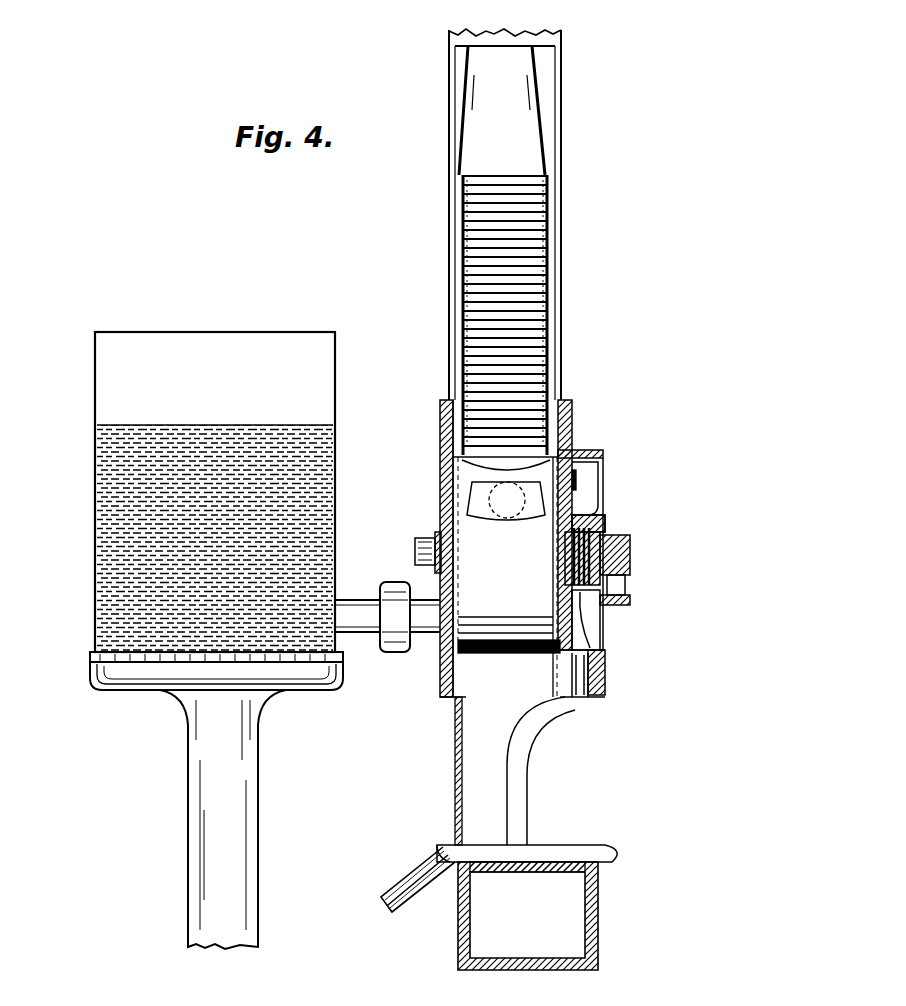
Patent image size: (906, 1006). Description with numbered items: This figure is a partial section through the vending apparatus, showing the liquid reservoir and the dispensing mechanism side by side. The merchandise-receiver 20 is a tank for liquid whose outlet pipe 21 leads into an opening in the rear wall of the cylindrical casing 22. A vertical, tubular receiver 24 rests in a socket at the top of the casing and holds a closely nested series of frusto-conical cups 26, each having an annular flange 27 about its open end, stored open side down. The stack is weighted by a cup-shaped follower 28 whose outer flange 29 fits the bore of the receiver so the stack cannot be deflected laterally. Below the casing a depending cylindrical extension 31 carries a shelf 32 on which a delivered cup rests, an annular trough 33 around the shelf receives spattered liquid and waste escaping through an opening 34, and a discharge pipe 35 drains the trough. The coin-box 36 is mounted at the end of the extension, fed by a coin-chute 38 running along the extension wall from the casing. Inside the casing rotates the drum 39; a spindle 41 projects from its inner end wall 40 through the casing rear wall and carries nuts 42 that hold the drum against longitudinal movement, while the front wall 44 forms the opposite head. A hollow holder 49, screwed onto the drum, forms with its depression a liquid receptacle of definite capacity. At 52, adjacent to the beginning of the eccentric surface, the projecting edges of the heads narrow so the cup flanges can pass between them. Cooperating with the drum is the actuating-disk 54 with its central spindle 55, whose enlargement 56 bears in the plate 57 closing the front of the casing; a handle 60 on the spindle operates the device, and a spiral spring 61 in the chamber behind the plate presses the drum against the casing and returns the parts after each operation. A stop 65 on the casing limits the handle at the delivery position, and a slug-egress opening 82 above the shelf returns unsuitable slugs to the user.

The merchandise-receiver 20 is at (95, 492).
The pipe 21 is at (380, 640).
The casing 22 is at (585, 452).
The vertical receiver 24 is at (562, 316).
The cups 26 is at (560, 230).
The annular flange 27 is at (456, 276).
The follower 28 is at (502, 110).
The flange 29 is at (556, 50).
The cylindrical extension 31 is at (455, 750).
The shelf 32 is at (545, 845).
The annular trough 33 is at (614, 851).
The opening 34 is at (448, 850).
The discharge pipe 35 is at (408, 900).
The coin-box 36 is at (500, 958).
The coin-chute 38 is at (527, 718).
The drum 39 is at (490, 680).
The inner end wall 40 is at (440, 520).
The spindle 41 is at (416, 552).
The nuts 42 is at (420, 538).
The front wall 44 is at (555, 577).
The hollow holder 49 is at (470, 482).
The narrowed portion of heads 52 is at (548, 640).
The actuating-disk 54 is at (575, 496).
The spindle 55 is at (631, 555).
The enlargement 56 is at (606, 528).
The plate 57 is at (590, 628).
The handle 60 is at (622, 585).
The spring 61 is at (605, 660).
The stop 65 is at (622, 604).
The slug-egress opening 82 is at (590, 694).